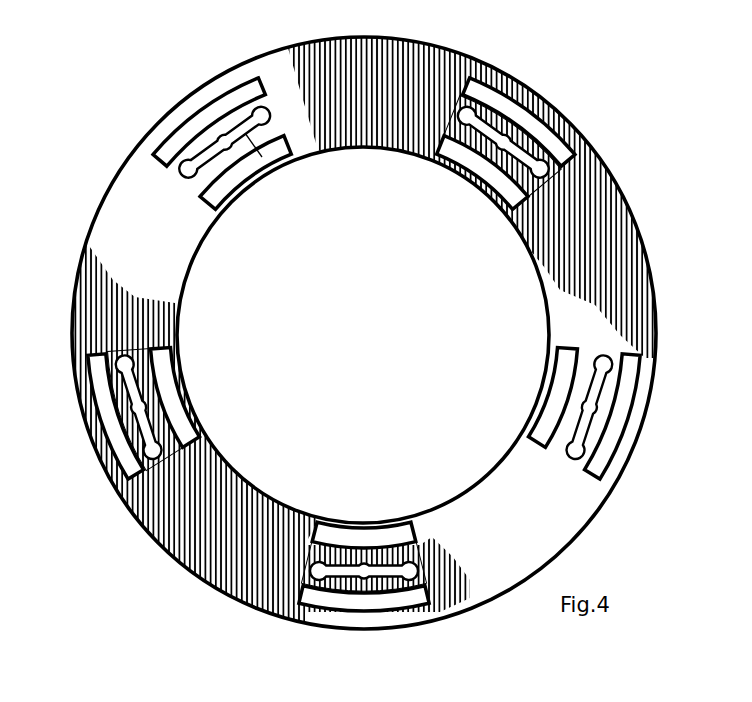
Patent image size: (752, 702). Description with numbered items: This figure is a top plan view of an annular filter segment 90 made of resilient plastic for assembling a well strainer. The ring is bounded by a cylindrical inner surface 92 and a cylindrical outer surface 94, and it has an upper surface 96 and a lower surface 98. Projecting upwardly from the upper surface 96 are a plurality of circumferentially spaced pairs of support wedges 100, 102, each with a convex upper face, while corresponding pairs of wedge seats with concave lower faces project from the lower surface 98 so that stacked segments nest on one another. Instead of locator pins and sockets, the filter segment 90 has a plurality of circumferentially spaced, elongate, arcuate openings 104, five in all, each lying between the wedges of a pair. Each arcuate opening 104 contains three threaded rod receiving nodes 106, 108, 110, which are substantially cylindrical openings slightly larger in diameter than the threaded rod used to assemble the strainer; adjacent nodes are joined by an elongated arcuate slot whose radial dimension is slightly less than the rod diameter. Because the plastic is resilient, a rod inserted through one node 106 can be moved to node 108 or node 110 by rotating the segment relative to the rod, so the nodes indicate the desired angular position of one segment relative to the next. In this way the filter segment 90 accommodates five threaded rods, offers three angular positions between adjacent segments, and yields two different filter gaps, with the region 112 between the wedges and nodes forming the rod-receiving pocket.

The annular filter segment 90 is at (630, 115).
The cylindrical inner surface 92 is at (540, 262).
The cylindrical outer surface 94 is at (636, 224).
The upper surface 96 is at (580, 497).
The lower surface 98 is at (100, 208).
The support wedge 100 is at (225, 205).
The support wedge 102 is at (204, 112).
The elongate arcuate opening 104 is at (185, 170).
The threaded rod receiving node 106 is at (192, 180).
The threaded rod receiving node 108 is at (247, 168).
The threaded rod receiving node 110 is at (277, 112).
The pocket recess 112 is at (280, 162).